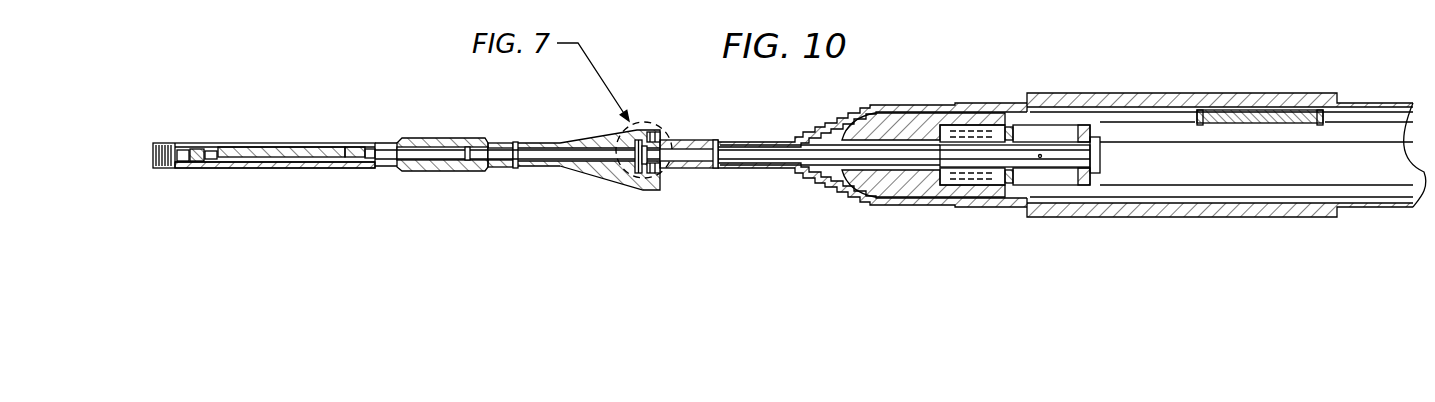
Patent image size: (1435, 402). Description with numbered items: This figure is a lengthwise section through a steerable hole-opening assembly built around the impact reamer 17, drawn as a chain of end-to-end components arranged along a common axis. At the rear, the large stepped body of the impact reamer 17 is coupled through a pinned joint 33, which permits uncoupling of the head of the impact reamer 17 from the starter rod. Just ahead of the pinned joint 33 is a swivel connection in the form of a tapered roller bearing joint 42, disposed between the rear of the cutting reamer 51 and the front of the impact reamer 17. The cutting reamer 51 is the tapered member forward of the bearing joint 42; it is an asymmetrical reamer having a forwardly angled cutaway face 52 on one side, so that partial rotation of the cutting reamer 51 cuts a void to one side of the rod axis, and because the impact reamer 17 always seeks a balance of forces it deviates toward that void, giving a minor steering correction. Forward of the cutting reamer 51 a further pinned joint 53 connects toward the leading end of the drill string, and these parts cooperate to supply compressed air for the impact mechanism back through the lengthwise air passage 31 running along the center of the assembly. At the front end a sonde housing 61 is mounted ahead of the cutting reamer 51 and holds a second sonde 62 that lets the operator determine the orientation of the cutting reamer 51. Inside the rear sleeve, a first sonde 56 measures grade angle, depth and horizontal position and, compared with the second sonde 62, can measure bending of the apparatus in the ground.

The impact reamer 17 is at (988, 70).
The air passage 31 is at (543, 167).
The pinned joint 33 is at (699, 138).
The tapered roller bearing joint 42 is at (662, 174).
The cutting reamer 51 is at (612, 172).
The forwardly angled cutaway face 52 is at (590, 135).
The pinned joint 53 is at (447, 140).
The sonde 56 is at (1273, 122).
The sonde housing 61 is at (275, 170).
The second sonde 62 is at (277, 147).